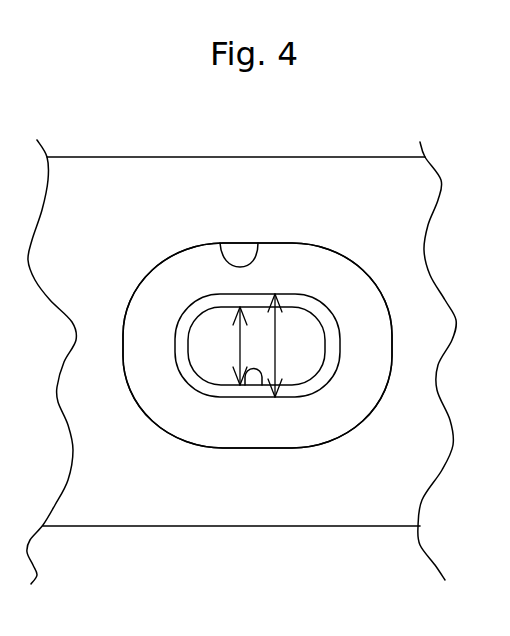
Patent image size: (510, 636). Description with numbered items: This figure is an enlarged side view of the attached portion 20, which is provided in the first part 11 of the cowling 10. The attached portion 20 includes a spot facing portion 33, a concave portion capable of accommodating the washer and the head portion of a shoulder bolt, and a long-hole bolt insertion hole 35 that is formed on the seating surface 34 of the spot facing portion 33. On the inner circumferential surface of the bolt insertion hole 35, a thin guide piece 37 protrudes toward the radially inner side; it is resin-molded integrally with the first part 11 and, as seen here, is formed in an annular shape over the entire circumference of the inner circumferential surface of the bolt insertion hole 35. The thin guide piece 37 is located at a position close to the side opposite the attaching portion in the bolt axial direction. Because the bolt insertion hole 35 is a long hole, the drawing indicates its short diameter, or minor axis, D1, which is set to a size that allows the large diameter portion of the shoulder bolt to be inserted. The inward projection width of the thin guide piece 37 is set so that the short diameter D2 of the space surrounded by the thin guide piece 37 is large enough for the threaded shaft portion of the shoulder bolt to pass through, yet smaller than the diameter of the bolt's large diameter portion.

The cowling 10 is at (241, 375).
The first part 11 is at (202, 498).
The attached portion 20 is at (320, 460).
The spot facing portion 33 is at (258, 262).
The seating surface 34 is at (348, 295).
The bolt insertion hole 35 is at (247, 387).
The thin guide piece 37 is at (195, 298).
The short diameter of the bolt insertion hole D1 is at (288, 345).
The short diameter of the space surrounded by the thin guide piece D2 is at (223, 346).